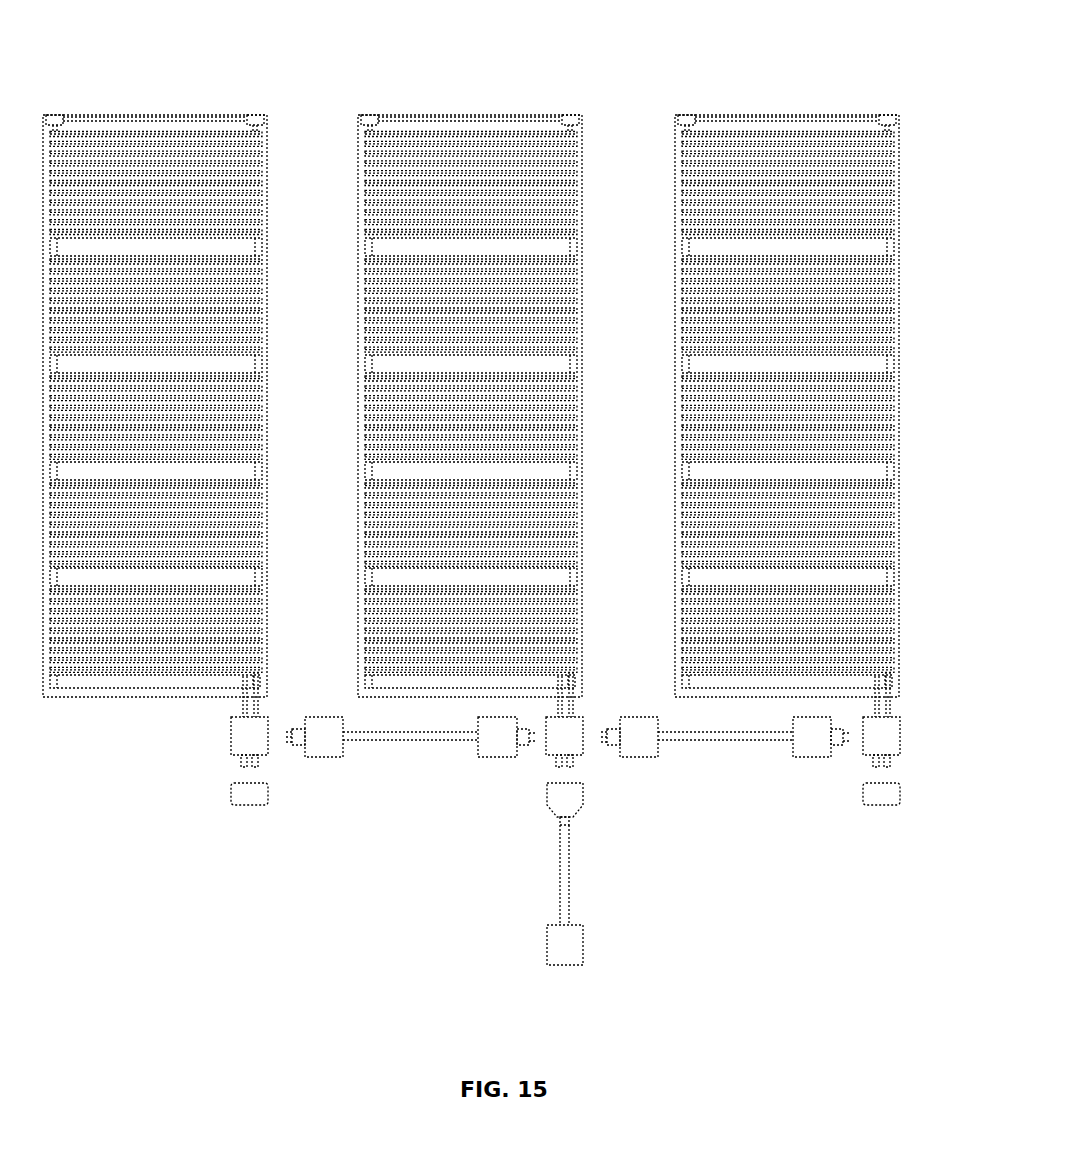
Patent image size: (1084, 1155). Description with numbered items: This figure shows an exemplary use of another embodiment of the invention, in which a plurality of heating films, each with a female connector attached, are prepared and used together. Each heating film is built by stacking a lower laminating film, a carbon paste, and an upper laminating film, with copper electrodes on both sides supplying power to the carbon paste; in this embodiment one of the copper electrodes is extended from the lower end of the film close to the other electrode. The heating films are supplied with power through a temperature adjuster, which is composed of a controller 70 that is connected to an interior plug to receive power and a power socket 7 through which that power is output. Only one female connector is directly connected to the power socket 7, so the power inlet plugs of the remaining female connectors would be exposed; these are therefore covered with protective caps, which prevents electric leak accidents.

The power socket 7 is at (575, 793).
The controller 70 is at (575, 942).